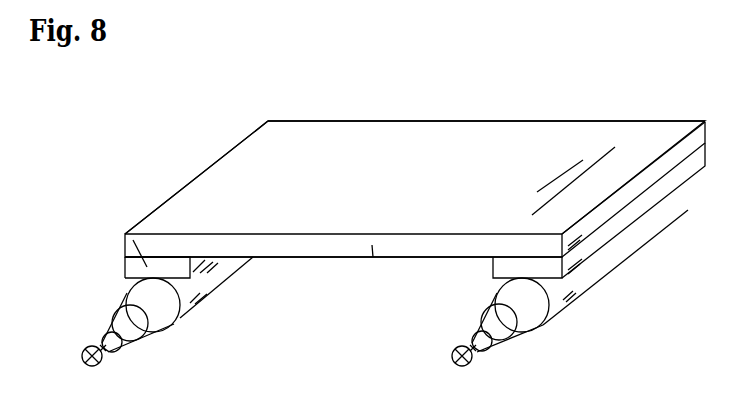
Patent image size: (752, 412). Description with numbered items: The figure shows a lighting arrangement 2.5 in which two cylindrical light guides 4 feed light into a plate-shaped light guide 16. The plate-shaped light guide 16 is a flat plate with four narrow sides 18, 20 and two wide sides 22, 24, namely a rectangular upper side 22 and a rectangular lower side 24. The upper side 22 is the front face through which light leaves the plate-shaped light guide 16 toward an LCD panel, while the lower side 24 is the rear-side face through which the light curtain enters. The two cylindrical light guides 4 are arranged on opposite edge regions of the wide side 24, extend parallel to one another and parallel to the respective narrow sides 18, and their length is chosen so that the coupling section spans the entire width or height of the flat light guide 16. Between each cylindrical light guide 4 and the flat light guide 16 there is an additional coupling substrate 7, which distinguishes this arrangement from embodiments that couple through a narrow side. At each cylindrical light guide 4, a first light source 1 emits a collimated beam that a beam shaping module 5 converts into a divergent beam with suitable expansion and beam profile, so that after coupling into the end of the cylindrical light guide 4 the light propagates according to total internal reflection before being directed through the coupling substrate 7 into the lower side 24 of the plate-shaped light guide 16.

The first light source 1 is at (85, 348).
The cylindrical light guide 4 is at (138, 290).
The beam shaping module 5 is at (117, 327).
The coupling substrate 7 is at (125, 234).
The plate-shaped light guide 16 is at (400, 160).
The narrow side 18 is at (190, 180).
The narrow side 20 is at (452, 122).
The upper side 22 is at (367, 212).
The lower side 24 is at (370, 257).
The lighting arrangement 2.5 is at (147, 123).